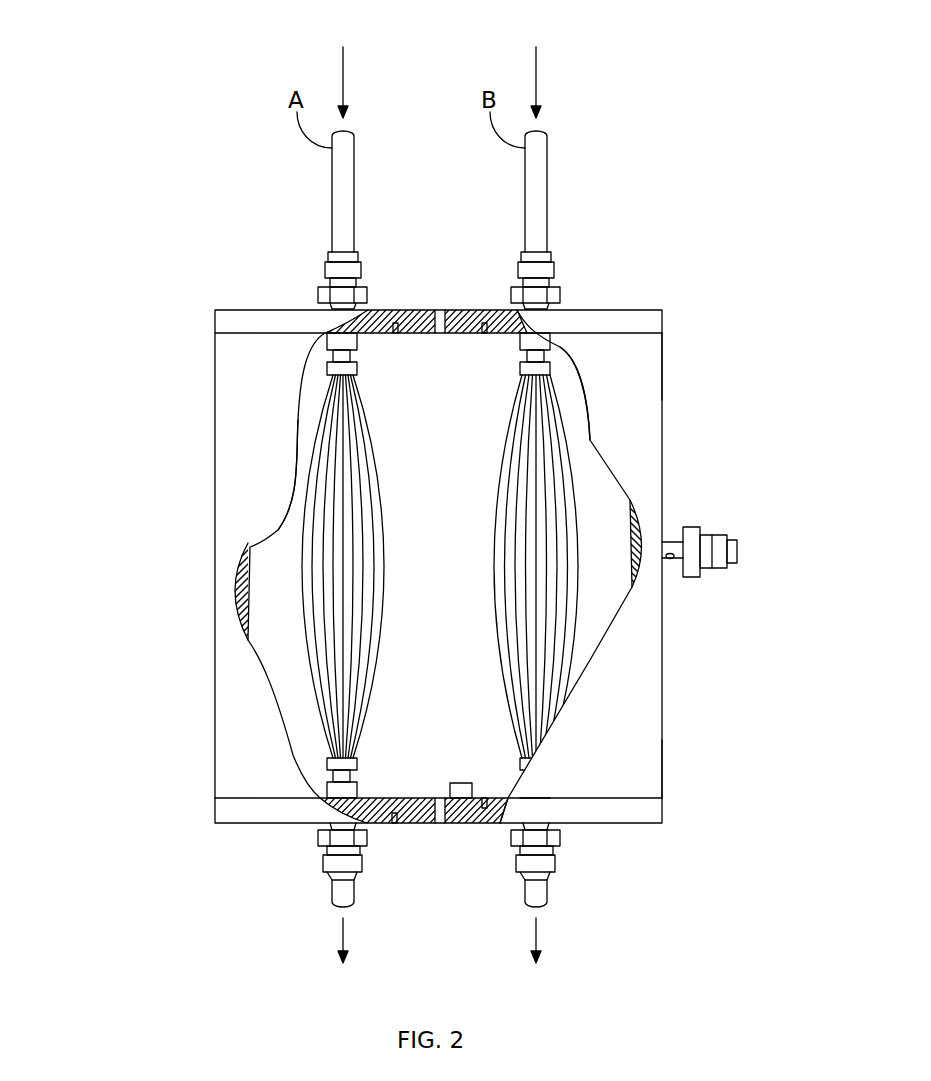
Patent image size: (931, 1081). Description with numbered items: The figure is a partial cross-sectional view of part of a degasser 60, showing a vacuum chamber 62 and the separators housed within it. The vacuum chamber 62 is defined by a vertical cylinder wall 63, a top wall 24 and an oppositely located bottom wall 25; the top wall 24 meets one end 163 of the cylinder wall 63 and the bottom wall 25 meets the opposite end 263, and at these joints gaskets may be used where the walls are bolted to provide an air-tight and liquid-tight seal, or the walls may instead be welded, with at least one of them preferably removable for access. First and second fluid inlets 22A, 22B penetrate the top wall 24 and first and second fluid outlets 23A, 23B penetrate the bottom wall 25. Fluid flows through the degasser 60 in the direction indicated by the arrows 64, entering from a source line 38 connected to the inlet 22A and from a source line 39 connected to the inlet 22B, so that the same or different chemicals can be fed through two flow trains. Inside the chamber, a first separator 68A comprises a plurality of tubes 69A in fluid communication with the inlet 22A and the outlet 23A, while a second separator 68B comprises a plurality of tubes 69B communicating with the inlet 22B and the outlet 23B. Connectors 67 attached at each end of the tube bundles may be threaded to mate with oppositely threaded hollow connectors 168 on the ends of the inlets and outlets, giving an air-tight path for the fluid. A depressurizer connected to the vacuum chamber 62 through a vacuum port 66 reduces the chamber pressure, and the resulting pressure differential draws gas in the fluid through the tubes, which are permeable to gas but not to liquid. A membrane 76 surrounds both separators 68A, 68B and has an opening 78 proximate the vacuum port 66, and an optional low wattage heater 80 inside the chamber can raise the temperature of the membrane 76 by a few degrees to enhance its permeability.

The degasser 60 is at (165, 557).
The vacuum chamber 62 is at (458, 572).
The vertical cylinder wall 63 is at (665, 705).
The end of the cylindrical wall 163 is at (663, 340).
The opposite end of the cylindrical wall 263 is at (665, 800).
The top wall 24 is at (655, 308).
The bottom wall 25 is at (637, 825).
The source line 38 is at (354, 165).
The source line 39 is at (547, 165).
The first fluid inlet 22A is at (355, 245).
The second fluid inlet 22B is at (548, 245).
The first fluid outlet 23A is at (332, 895).
The second fluid outlet 23B is at (525, 893).
The arrows 64 is at (345, 63).
The connectors 67 is at (330, 372).
The hollow connectors 168 is at (353, 355).
The plurality of tubes 69A is at (333, 447).
The plurality of tubes 69B is at (545, 452).
The first separator 68A is at (305, 512).
The second separator 68B is at (573, 490).
The membrane 76 is at (258, 665).
The opening 78 is at (640, 525).
The vacuum port 66 is at (738, 553).
The low wattage heater 80 is at (460, 800).